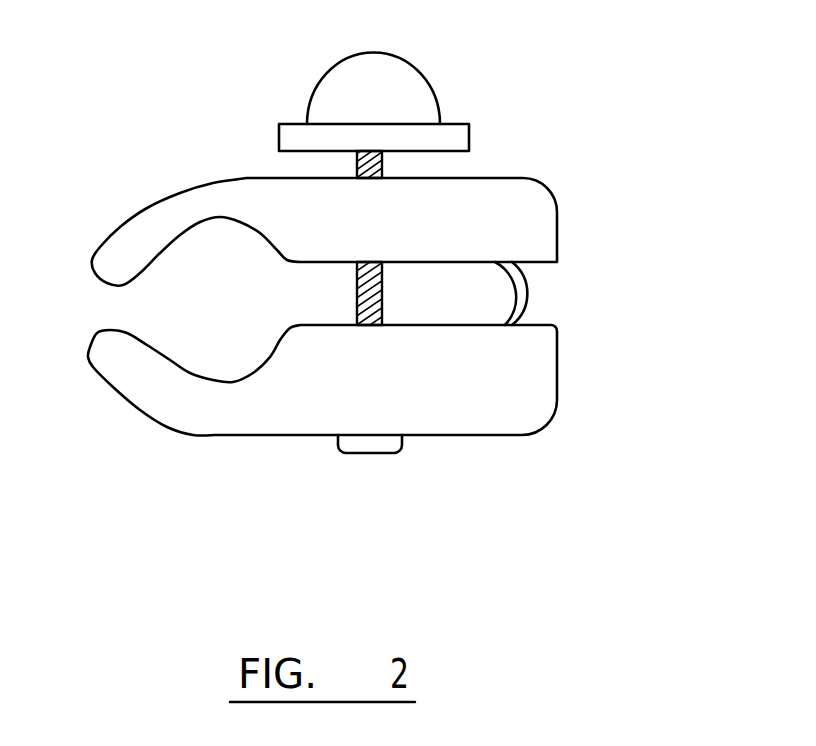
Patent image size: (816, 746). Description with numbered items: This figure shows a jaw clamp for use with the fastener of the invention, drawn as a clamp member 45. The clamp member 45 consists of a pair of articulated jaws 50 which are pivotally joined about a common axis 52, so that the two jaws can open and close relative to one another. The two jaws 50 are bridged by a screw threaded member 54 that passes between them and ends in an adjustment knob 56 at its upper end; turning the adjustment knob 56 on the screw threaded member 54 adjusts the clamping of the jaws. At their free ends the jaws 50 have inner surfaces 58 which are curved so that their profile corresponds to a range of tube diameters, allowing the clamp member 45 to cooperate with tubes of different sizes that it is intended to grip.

The clamp member 45 is at (447, 455).
The articulated jaws 50 is at (482, 208).
The common axis 52 is at (527, 295).
The screw threaded member 54 is at (358, 298).
The adjustment knob 56 is at (395, 92).
The inner surfaces 58 is at (185, 363).